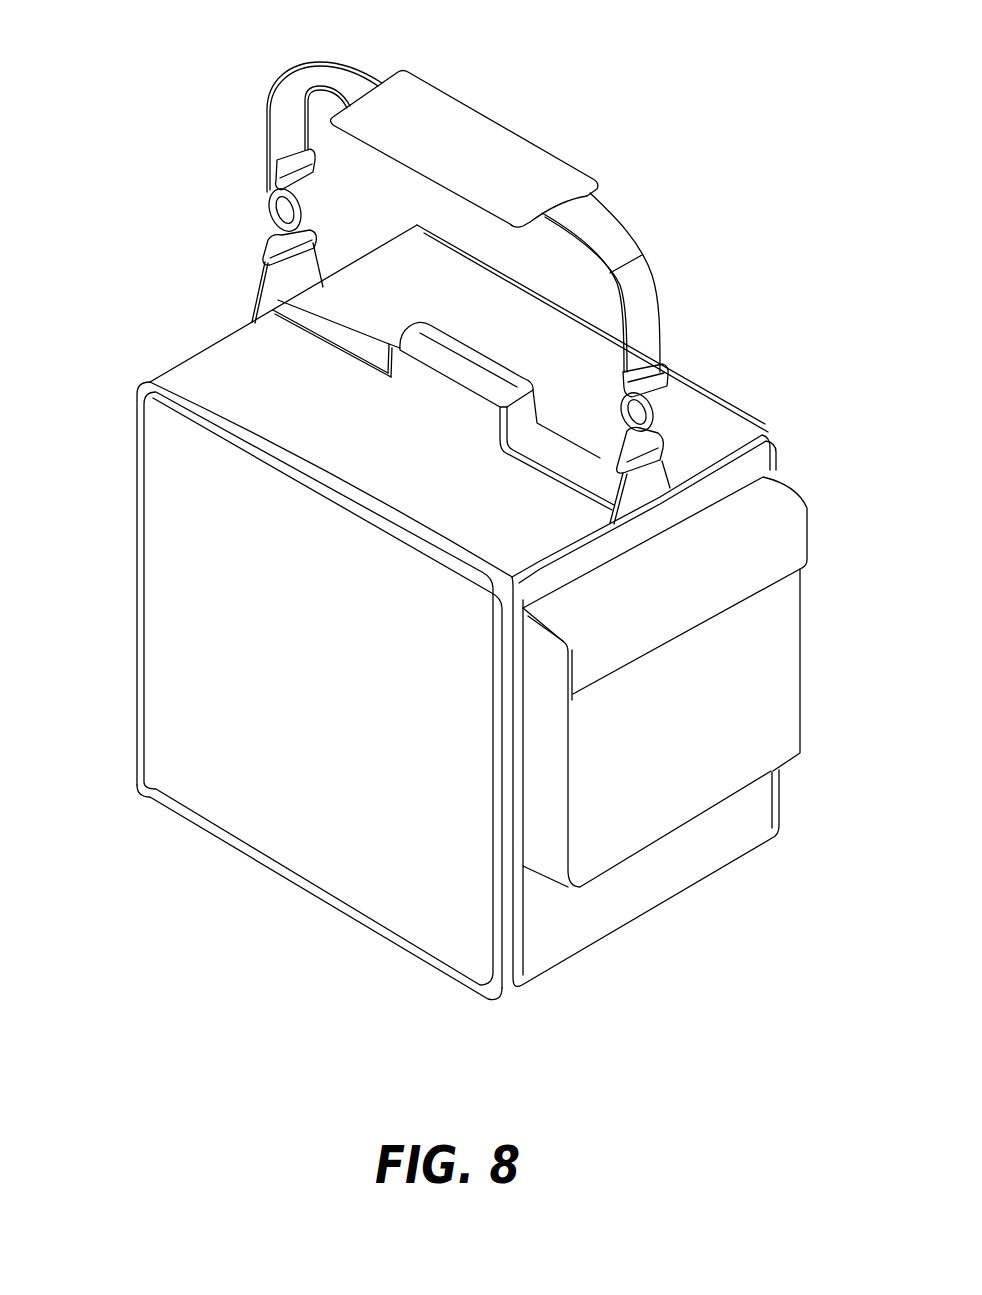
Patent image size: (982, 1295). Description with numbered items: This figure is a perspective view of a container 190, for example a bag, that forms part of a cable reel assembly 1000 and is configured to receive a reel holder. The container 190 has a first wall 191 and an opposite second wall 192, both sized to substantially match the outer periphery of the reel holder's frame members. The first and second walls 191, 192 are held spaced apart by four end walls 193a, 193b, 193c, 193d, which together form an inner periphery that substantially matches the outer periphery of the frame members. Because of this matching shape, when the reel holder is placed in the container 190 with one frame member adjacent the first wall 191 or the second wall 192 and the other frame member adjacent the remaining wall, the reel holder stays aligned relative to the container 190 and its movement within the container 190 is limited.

The cable reel assembly 1000 is at (439, 519).
The container 190 is at (268, 806).
The first wall 191 is at (782, 437).
The second wall 192 is at (403, 873).
The end wall 193a is at (268, 368).
The end wall 193b is at (568, 920).
The end wall 193c is at (327, 915).
The end wall 193d is at (133, 593).